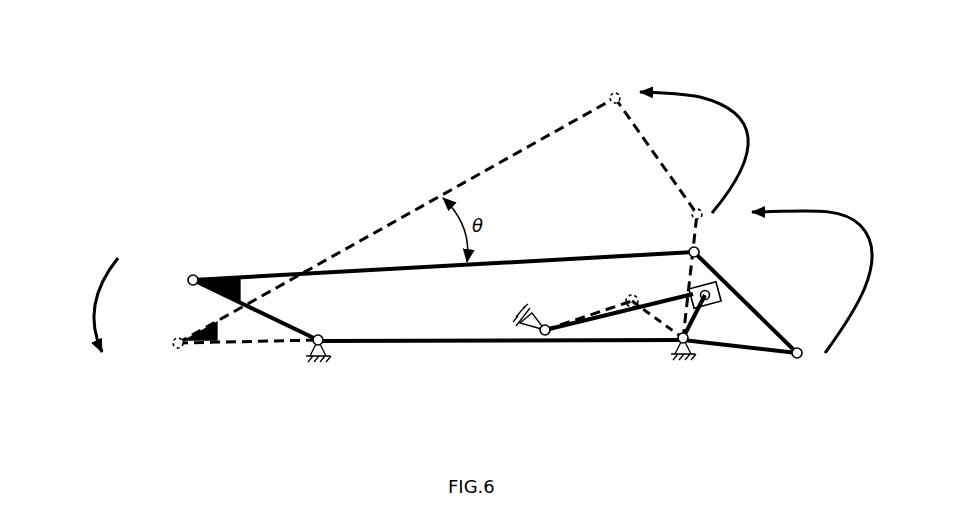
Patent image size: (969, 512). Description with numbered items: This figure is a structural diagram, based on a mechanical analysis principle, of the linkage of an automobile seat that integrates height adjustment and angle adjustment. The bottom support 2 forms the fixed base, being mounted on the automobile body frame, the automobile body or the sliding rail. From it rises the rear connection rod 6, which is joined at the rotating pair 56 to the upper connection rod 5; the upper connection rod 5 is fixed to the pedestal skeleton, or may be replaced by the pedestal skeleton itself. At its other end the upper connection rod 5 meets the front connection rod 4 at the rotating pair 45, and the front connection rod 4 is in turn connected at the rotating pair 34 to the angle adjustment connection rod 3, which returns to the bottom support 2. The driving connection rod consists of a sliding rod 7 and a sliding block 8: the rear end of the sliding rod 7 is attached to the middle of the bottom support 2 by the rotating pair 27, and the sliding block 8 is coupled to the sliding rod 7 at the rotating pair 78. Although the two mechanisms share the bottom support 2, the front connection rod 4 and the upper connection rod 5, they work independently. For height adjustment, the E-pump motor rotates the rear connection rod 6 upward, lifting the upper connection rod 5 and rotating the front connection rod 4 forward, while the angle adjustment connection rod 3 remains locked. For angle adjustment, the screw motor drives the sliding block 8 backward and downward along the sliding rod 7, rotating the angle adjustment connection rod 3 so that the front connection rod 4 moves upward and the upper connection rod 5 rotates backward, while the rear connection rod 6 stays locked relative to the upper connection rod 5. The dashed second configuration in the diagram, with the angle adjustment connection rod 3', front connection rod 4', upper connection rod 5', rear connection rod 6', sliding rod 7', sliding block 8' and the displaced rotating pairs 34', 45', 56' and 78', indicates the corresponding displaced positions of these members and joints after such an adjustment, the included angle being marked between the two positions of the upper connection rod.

The bottom support 2 is at (460, 343).
The angle adjustment connection rod 3 is at (740, 366).
The first link in second position 3' is at (658, 276).
The front connection rod 4 is at (753, 302).
The second link in second position 4' is at (642, 156).
The upper connection rod 5 is at (443, 250).
The third link in second position 5' is at (396, 220).
The rear connection rod 6 is at (286, 310).
The fourth link in second position 6' is at (248, 372).
The sliding rod 7 is at (619, 347).
The fifth link in second position 7' is at (587, 305).
The sliding block 8 is at (713, 288).
The sixth link in second position 8' is at (624, 304).
The rotating pair 27 is at (545, 324).
The rotating pair 34 is at (831, 377).
The pivot joint 34 in second position 34' is at (653, 202).
The rotating pair 45 is at (647, 241).
The pivot joint 45 in second position 45' is at (646, 65).
The rotating pair 56 is at (201, 248).
The pivot joint 56 in second position 56' is at (159, 369).
The rotating pair 78 is at (743, 274).
The slider joint 78 in second position 78' is at (639, 349).